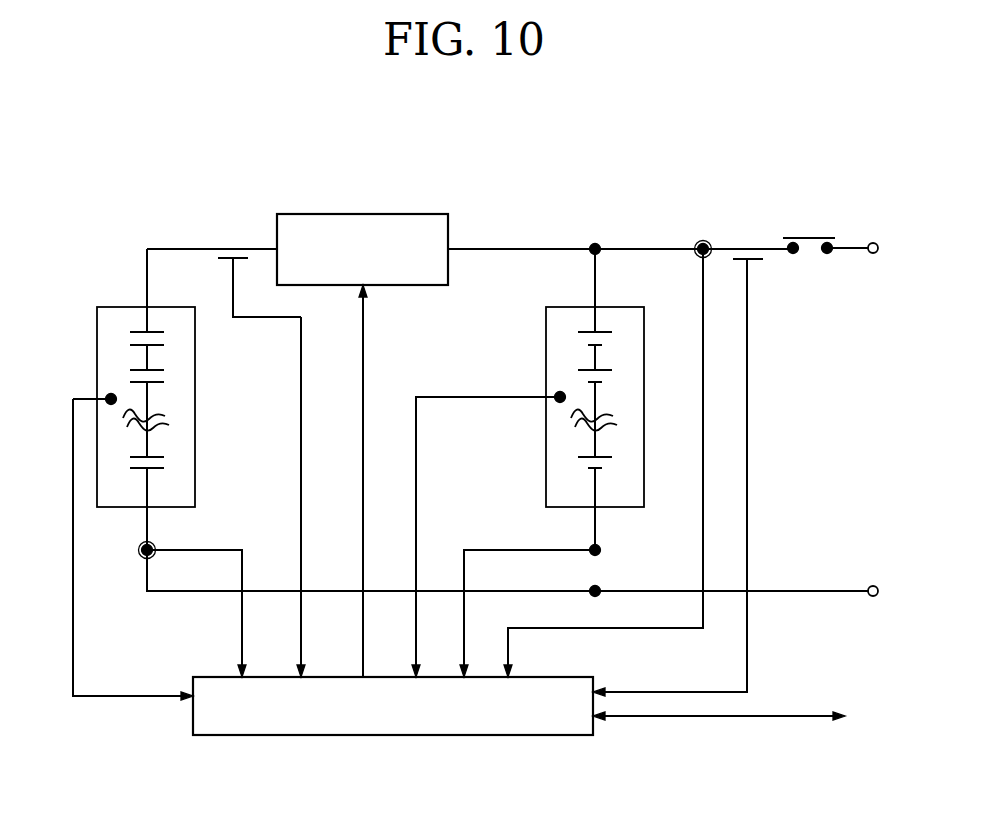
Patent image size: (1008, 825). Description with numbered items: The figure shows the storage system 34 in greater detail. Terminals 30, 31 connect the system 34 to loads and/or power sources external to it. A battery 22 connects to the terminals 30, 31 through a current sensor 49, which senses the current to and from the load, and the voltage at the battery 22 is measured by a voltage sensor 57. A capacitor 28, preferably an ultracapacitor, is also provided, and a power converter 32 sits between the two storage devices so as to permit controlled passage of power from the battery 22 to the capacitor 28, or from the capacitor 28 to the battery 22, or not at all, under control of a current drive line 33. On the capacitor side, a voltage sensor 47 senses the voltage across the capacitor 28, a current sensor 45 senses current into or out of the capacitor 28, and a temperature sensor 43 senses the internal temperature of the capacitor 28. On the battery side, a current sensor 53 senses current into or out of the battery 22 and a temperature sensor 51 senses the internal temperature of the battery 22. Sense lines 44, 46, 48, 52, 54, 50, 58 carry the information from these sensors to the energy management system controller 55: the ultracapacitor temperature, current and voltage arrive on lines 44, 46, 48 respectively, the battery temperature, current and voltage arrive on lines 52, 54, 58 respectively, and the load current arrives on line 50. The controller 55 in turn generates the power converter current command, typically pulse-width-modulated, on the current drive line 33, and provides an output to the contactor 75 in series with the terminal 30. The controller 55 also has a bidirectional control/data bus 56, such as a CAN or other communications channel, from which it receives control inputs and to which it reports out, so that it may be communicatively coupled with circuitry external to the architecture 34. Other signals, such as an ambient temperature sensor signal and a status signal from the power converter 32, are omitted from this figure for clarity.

The storage system 34 is at (446, 175).
The power converter 32 is at (338, 214).
The capacitor 28 is at (195, 418).
The battery 22 is at (546, 323).
The temperature sensor 43 is at (109, 394).
The sense line 44 is at (73, 520).
The current sensor 45 is at (142, 556).
The sense line 46 is at (242, 570).
The voltage sensor 47 is at (224, 258).
The sense line 48 is at (301, 462).
The current drive line 33 is at (363, 522).
The terminal 31 is at (840, 591).
The terminal 30 is at (855, 249).
The contactor 75 is at (803, 238).
The current sensor 49 is at (705, 240).
The sense line 50 is at (703, 352).
The temperature sensor 51 is at (557, 394).
The sense line 52 is at (416, 470).
The current sensor 53 is at (601, 553).
The sense line 54 is at (556, 550).
The voltage sensor 57 is at (752, 262).
The sense line 58 is at (747, 432).
The energy management system controller 55 is at (290, 735).
The bidirectional control/data bus 56 is at (752, 716).